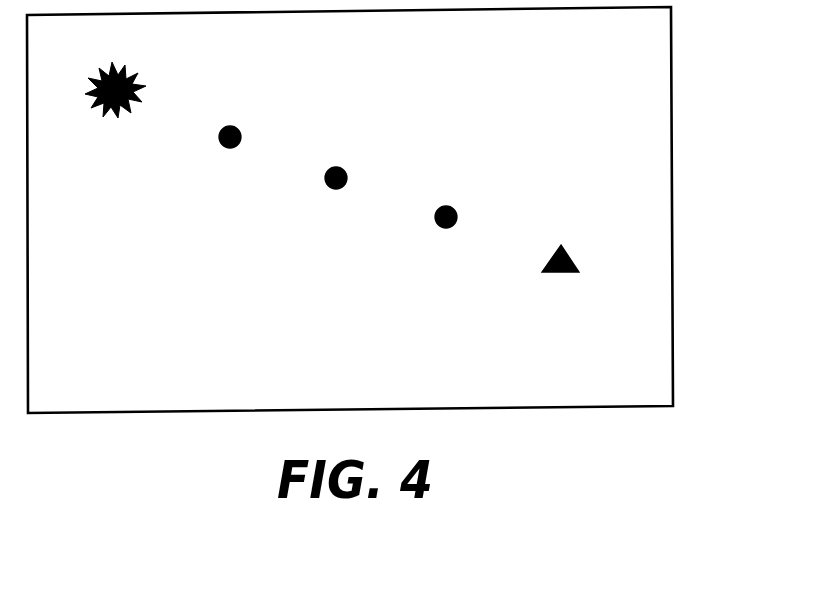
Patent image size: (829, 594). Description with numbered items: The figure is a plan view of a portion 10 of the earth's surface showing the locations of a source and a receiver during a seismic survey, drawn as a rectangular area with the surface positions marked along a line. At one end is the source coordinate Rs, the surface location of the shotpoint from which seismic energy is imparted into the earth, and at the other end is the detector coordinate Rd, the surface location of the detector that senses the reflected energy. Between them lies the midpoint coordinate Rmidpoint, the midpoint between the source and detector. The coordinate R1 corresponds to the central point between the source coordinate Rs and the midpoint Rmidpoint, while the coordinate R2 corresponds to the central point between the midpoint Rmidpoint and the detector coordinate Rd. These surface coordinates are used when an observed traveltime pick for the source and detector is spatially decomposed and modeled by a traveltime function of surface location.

The portion of the earth's surface 10 is at (368, 296).
The source coordinate Rs is at (121, 81).
The first central point coordinate R1 is at (241, 122).
The midpoint coordinate Rmidpoint is at (381, 165).
The second central point coordinate R2 is at (457, 204).
The detector coordinate Rd is at (568, 246).